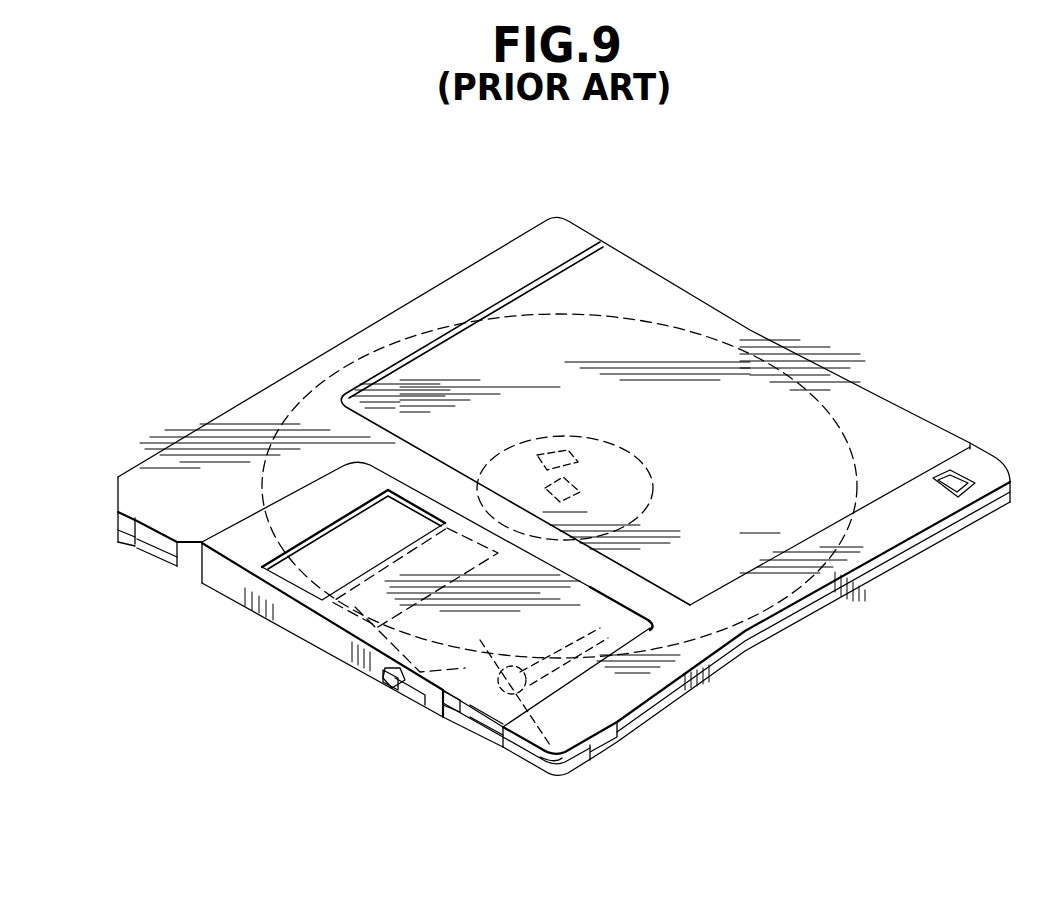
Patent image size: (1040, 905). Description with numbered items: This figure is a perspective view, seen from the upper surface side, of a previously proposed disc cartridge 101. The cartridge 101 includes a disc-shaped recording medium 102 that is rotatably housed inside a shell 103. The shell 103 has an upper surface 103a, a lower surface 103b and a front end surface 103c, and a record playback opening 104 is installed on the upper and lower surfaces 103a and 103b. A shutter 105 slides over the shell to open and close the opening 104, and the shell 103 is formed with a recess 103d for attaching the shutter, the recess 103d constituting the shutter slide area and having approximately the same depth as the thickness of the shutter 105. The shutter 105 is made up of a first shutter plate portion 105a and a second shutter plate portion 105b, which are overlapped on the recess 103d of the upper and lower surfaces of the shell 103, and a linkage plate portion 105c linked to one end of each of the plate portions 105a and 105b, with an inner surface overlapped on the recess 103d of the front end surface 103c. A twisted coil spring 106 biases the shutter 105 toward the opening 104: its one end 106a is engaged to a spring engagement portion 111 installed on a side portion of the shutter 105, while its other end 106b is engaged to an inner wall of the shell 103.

The disc cartridge 101 is at (700, 263).
The disc-shaped recording medium 102 is at (618, 322).
The shell 103 is at (321, 354).
The upper surface 103a is at (500, 262).
The lower surface 103b is at (453, 326).
The front end surface 103c is at (122, 542).
The recess for attaching the shutter 103d is at (573, 673).
The record playback opening 104 is at (387, 568).
The shutter 105 is at (527, 818).
The first shutter plate portion 105a is at (457, 680).
The second shutter plate portion 105b is at (488, 700).
The linkage plate portion 105c is at (423, 697).
The spring 106 is at (540, 717).
The one end of spring 106a is at (392, 700).
The other end of spring 106b is at (553, 753).
The spring engagement portion 111 is at (385, 683).